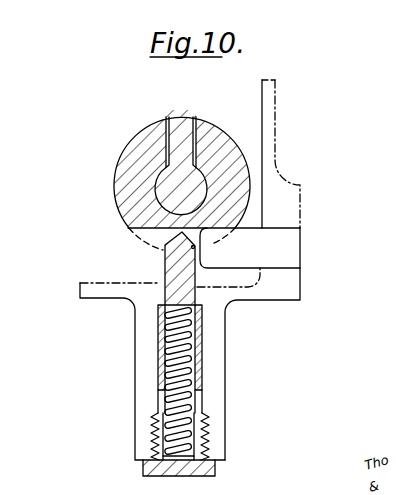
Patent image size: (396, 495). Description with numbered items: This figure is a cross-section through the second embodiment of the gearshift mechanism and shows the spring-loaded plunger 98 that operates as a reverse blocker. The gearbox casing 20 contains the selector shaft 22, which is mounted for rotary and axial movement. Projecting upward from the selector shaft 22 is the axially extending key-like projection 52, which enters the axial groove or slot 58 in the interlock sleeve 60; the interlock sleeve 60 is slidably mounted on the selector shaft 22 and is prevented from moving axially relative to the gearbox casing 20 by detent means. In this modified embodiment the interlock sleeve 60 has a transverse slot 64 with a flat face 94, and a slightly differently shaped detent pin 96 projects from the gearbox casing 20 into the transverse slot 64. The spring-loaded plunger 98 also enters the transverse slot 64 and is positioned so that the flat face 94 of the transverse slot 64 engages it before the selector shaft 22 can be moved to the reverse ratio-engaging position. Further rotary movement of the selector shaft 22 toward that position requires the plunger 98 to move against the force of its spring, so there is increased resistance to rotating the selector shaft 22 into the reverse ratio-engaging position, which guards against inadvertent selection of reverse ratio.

The gearbox casing 20 is at (281, 198).
The selector shaft 22 is at (170, 182).
The axially extending key-like projection 52 is at (196, 117).
The axial groove or slot 58 is at (167, 116).
The interlock sleeve 60 is at (128, 195).
The transverse slot 64 is at (130, 231).
The flat face 94 is at (154, 259).
The detent pin 96 is at (298, 246).
The spring-loaded plunger 98 is at (172, 282).